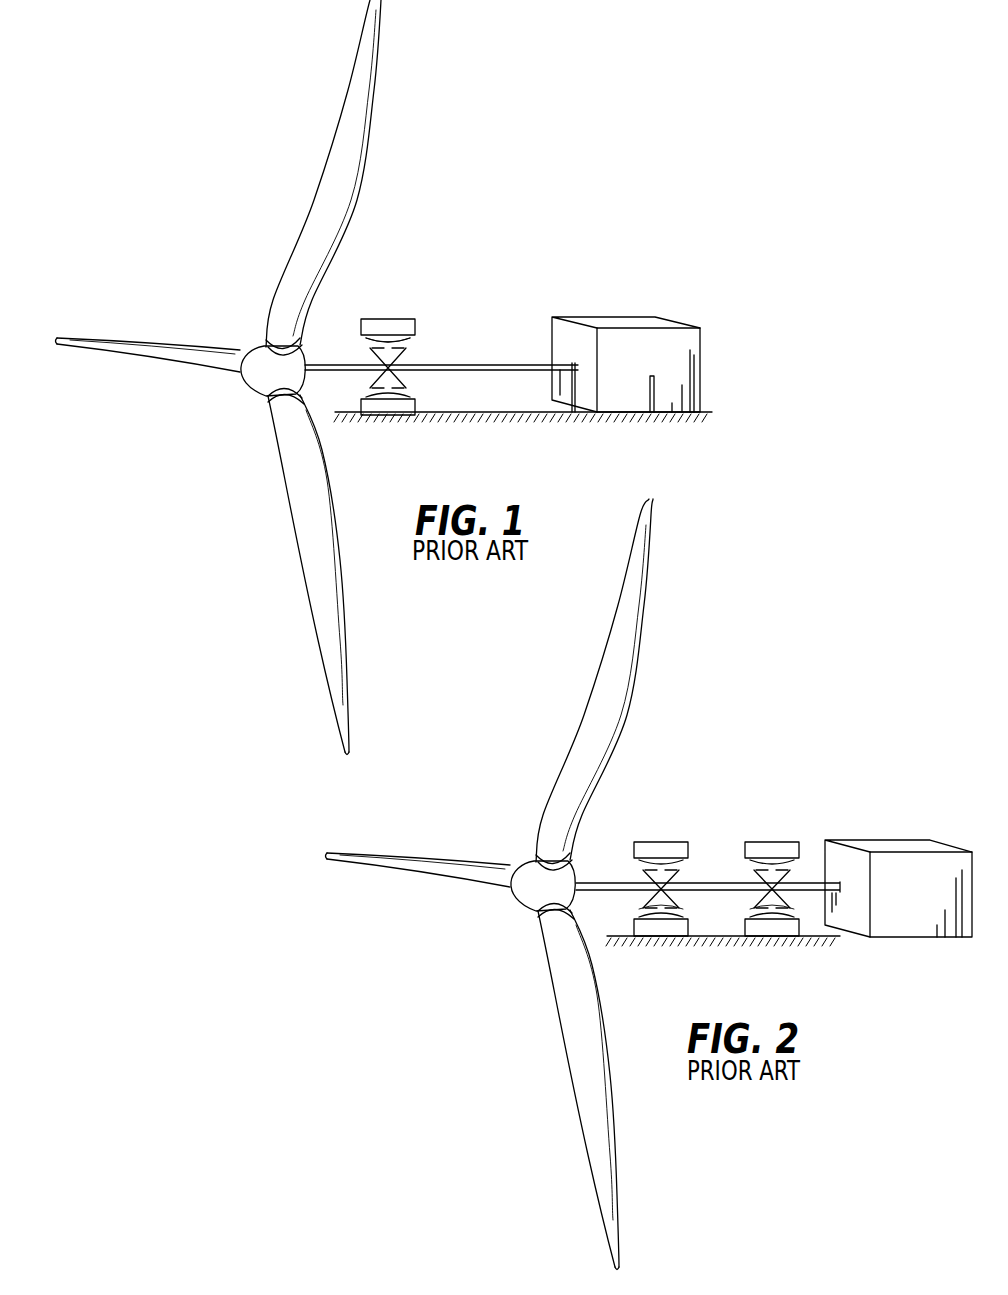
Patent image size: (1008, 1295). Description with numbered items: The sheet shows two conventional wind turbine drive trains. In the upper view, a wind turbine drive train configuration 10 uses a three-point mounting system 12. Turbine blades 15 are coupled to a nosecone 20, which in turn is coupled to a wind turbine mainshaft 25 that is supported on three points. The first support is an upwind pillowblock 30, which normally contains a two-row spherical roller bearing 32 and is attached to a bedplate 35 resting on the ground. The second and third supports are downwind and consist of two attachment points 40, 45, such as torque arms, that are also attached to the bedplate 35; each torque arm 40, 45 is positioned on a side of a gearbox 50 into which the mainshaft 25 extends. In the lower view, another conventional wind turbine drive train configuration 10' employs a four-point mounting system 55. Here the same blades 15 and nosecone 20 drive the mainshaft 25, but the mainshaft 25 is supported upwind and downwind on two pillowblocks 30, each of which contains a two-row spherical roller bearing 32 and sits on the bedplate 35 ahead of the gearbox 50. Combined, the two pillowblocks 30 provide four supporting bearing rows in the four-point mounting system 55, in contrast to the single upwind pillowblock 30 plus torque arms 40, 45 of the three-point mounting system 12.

In FIG. 1, the wind turbine drive train configuration 10 is at (637, 74).
In FIG. 2, the wind turbine drive train configuration 10' is at (909, 596).
In FIG. 1, the three-point mounting system 12 is at (486, 228).
In FIG. 1, the turbine blades 15 is at (373, 90).
In FIG. 2, the turbine blades 15 is at (644, 613).
In FIG. 1, the nosecone 20 is at (258, 352).
In FIG. 2, the nosecone 20 is at (528, 872).
In FIG. 1, the wind turbine mainshaft 25 is at (489, 365).
In FIG. 2, the wind turbine mainshaft 25 is at (810, 884).
In FIG. 1, the upwind pillowblock 30 is at (385, 318).
In FIG. 2, the upwind pillowblock 30 is at (743, 846).
In FIG. 1, the two-row spherical roller bearing 32 is at (400, 348).
In FIG. 2, the two-row spherical roller bearing 32 is at (681, 903).
In FIG. 1, the bedplate 35 is at (440, 415).
In FIG. 2, the bedplate 35 is at (625, 940).
In FIG. 1, the attachment point 40 is at (577, 380).
In FIG. 1, the attachment point 45 is at (656, 386).
In FIG. 1, the gearbox 50 is at (638, 318).
In FIG. 2, the gearbox 50 is at (898, 842).
In FIG. 2, the four-point mounting system 55 is at (757, 750).